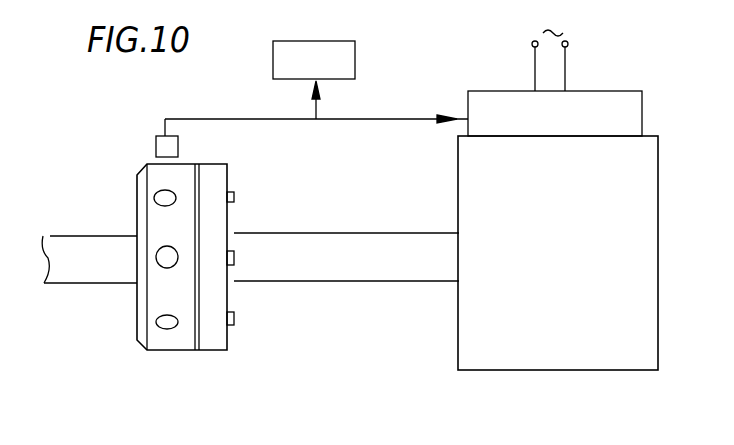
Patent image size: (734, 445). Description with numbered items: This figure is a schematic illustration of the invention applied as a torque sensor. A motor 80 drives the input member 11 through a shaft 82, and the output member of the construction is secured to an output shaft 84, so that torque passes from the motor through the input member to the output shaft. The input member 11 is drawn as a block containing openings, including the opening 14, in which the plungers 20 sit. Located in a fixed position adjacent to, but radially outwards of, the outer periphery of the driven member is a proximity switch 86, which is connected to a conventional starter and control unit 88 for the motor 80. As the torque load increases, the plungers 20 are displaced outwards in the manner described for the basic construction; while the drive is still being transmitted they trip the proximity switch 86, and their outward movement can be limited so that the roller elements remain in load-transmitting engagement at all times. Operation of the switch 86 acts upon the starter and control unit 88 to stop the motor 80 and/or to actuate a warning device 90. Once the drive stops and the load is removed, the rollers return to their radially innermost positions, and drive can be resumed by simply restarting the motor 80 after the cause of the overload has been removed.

The input member 11 is at (213, 323).
The bore 14 is at (157, 324).
The plungers 20 is at (165, 257).
The motor 80 is at (571, 266).
The shaft 82 is at (303, 267).
The output shaft 84 is at (87, 270).
The proximity switch 86 is at (162, 148).
The starter and control unit 88 is at (622, 110).
The warning device 90 is at (348, 58).